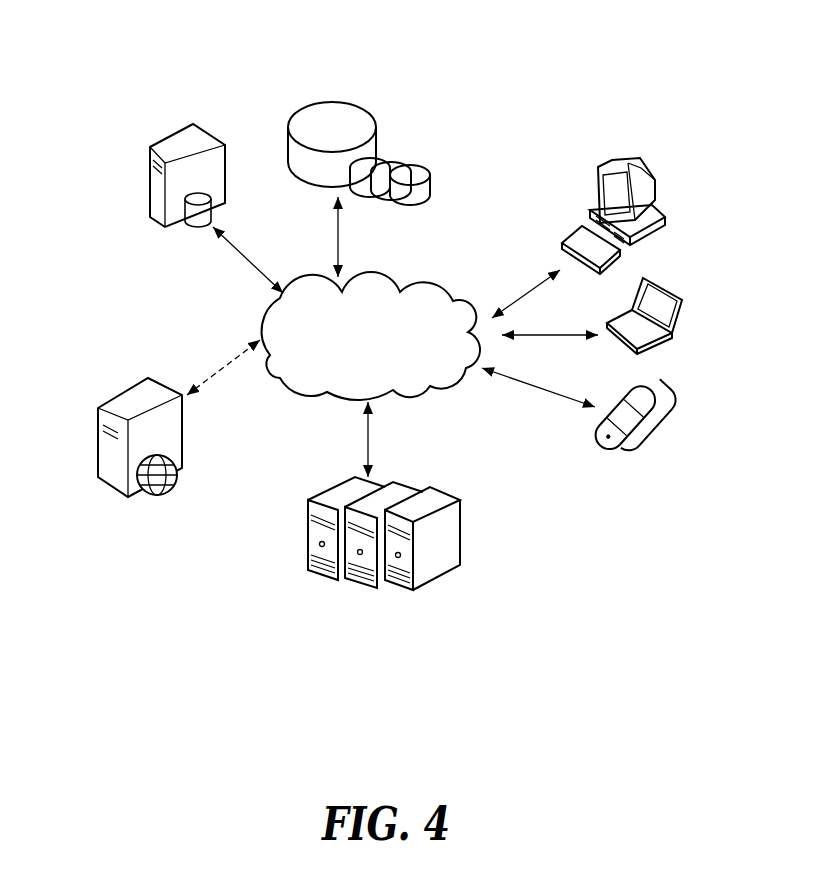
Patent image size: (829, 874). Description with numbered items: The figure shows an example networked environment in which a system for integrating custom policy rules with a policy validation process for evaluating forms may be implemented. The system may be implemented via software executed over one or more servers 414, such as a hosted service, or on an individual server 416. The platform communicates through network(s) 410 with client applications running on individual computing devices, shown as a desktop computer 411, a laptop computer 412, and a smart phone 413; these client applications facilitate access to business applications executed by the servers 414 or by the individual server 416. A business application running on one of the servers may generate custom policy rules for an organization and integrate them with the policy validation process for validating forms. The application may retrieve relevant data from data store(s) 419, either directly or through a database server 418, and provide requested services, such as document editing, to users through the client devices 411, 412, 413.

The network(s) 410 is at (376, 263).
The desktop computer 411 is at (655, 154).
The laptop computer 412 is at (686, 276).
The smart phone 413 is at (658, 387).
The servers 414 is at (334, 479).
The individual server 416 is at (116, 387).
The database server 418 is at (184, 238).
The data store(s) 419 is at (349, 78).